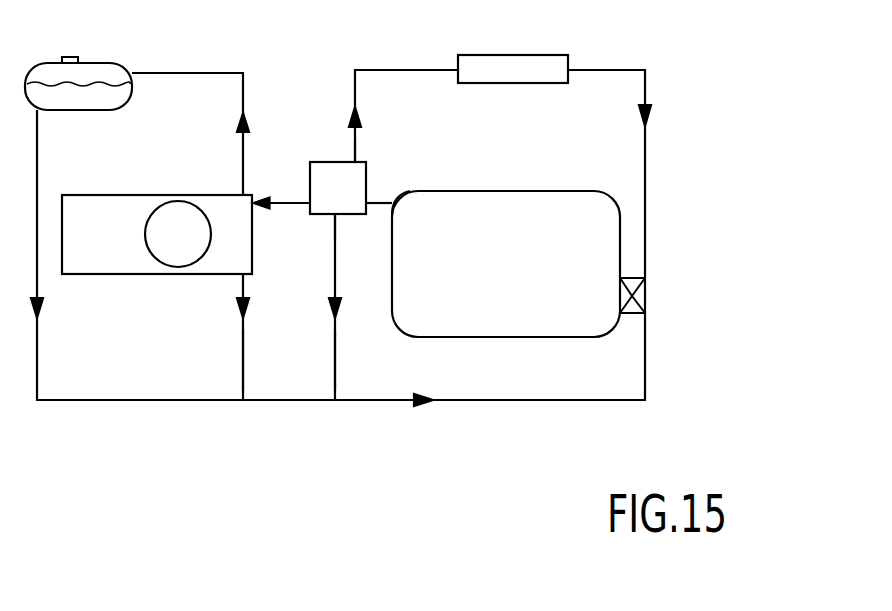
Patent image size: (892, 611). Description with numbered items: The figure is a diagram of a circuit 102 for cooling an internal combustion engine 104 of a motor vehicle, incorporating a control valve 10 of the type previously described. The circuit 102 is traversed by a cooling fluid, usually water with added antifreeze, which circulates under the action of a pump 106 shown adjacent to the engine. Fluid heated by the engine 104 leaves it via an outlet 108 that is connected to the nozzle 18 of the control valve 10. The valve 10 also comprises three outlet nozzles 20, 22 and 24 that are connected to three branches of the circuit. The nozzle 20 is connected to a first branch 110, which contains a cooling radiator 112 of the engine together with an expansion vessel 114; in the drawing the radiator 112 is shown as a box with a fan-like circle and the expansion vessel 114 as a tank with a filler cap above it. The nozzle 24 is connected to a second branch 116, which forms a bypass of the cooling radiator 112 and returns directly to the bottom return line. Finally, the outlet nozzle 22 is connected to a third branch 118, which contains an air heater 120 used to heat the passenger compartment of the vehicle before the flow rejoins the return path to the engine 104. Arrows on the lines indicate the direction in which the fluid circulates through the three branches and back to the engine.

The control valve 10 is at (351, 199).
The nozzle 18 is at (372, 198).
The outlet nozzle 20 is at (290, 200).
The outlet nozzle 22 is at (350, 160).
The outlet nozzle 24 is at (330, 216).
The circuit 102 is at (181, 409).
The internal combustion engine 104 is at (527, 278).
The pump 106 is at (648, 296).
The outlet 108 is at (396, 192).
The first branch 110 is at (236, 352).
The cooling radiator 112 is at (124, 254).
The expansion vessel 114 is at (114, 63).
The second branch 116 is at (327, 349).
The third branch 118 is at (408, 62).
The air heater 120 is at (523, 55).